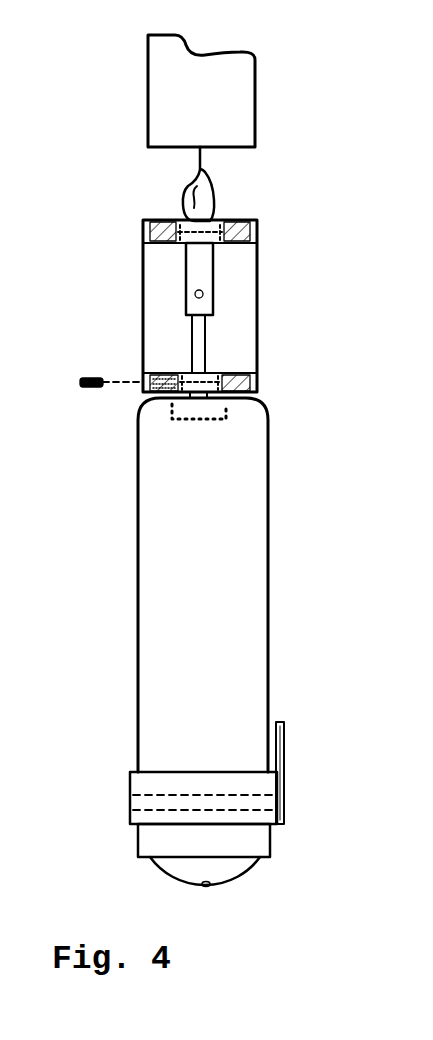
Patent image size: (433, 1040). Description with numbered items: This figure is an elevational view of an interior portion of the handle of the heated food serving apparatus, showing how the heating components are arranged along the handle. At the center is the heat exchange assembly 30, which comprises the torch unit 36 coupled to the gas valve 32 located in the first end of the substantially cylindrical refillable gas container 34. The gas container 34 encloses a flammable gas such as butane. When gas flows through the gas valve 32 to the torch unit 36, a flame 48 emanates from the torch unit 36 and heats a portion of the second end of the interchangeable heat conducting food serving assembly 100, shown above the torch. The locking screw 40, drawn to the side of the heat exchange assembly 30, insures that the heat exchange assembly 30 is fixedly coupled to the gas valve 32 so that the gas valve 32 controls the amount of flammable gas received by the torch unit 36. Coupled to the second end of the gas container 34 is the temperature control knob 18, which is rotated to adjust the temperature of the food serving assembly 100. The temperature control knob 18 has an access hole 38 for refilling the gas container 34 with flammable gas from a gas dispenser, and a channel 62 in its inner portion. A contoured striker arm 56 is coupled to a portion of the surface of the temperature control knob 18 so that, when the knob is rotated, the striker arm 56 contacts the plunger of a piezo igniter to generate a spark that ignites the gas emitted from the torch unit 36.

The interchangeable heat conducting food serving assembly 100 is at (263, 114).
The flame 48 is at (215, 197).
The heat exchange assembly 30 is at (328, 218).
The torch unit 36 is at (207, 279).
The locking screw 40 is at (82, 380).
The gas valve 32 is at (228, 420).
The refillable gas container 34 is at (219, 560).
The channel 62 is at (130, 798).
The striker arm 56 is at (284, 752).
The temperature control knob 18 is at (262, 842).
The access hole 38 is at (210, 886).